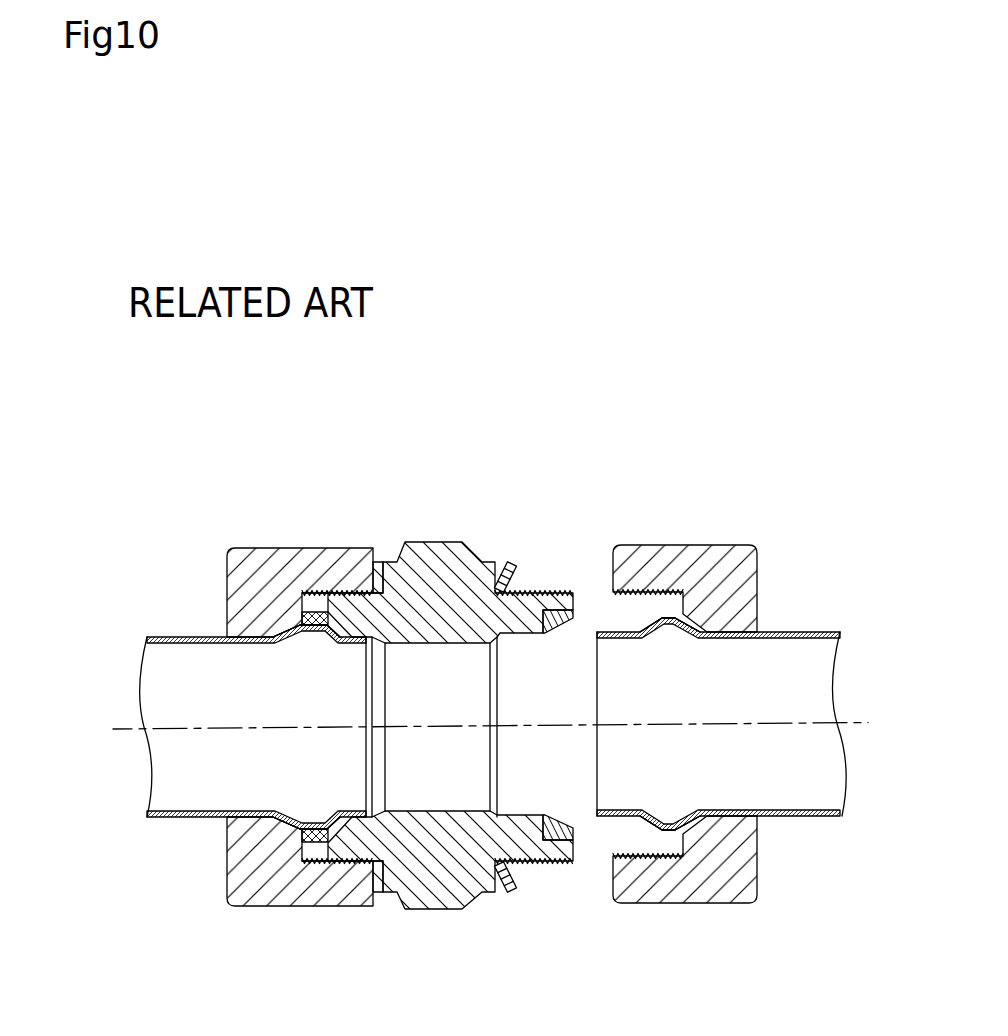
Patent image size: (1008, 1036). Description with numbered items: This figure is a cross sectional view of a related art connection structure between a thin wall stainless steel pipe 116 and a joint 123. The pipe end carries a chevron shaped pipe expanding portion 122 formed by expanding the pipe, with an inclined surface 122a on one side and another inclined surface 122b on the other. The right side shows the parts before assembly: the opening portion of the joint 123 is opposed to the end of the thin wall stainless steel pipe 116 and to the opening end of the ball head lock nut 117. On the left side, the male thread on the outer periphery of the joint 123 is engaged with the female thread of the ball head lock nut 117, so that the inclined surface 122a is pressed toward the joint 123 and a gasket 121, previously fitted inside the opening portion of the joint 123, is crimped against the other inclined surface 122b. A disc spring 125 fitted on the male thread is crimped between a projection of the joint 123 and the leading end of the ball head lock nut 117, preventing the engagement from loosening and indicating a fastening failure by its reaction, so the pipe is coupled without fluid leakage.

The thin wall stainless steel pipe 116 is at (187, 635).
The ball head lock nut 117 is at (226, 577).
The gasket 121 is at (330, 612).
The chevron shaped pipe expanding portion 122 is at (392, 436).
The inclined surface 122a is at (275, 632).
The another inclined surface 122b is at (311, 614).
The joint 123 is at (460, 542).
The disc spring 125 is at (378, 566).